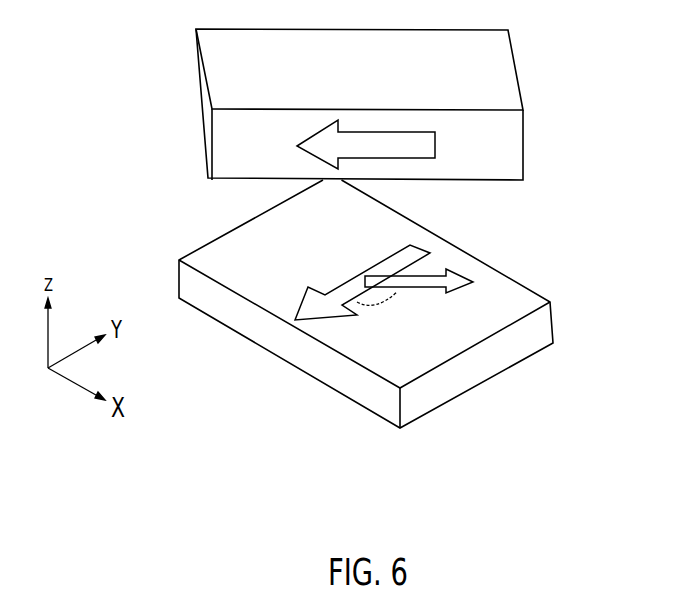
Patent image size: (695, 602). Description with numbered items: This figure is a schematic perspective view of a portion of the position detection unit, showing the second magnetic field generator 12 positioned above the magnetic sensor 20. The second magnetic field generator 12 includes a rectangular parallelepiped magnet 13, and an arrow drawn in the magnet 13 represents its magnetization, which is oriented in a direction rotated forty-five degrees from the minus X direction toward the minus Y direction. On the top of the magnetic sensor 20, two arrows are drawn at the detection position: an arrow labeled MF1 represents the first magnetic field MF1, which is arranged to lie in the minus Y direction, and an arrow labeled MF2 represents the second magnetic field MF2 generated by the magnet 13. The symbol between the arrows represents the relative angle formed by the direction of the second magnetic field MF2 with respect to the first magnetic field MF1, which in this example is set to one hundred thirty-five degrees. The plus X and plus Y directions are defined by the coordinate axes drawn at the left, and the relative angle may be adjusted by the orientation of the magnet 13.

The magnet 13 is at (419, 104).
The second magnetic field generator 12 is at (523, 146).
The magnetic sensor 20 is at (487, 378).
The first magnetic field MF1 is at (423, 247).
The second magnetic field MF2 is at (453, 262).